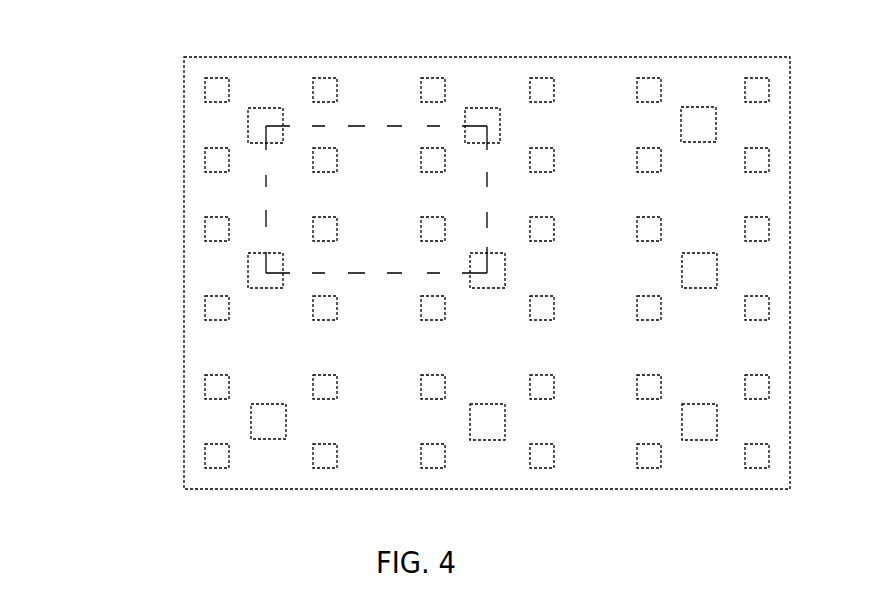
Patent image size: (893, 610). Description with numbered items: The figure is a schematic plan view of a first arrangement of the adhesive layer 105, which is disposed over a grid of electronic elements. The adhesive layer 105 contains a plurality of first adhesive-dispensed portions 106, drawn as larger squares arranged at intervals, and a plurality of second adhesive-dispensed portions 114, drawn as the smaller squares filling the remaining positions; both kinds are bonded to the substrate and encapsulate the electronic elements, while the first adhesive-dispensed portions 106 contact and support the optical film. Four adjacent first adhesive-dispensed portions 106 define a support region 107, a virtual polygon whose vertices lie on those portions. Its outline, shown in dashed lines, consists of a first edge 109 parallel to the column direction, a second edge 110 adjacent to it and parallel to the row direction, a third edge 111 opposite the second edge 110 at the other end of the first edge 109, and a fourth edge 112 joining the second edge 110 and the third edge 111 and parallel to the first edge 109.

The adhesive layer 105 is at (398, 241).
The first adhesive-dispensed portion 106 is at (265, 117).
The support region 107 is at (262, 182).
The first edge 109 is at (267, 220).
The second edge 110 is at (353, 125).
The third edge 111 is at (313, 273).
The fourth edge 112 is at (487, 187).
The second adhesive-dispensed portion 114 is at (212, 390).